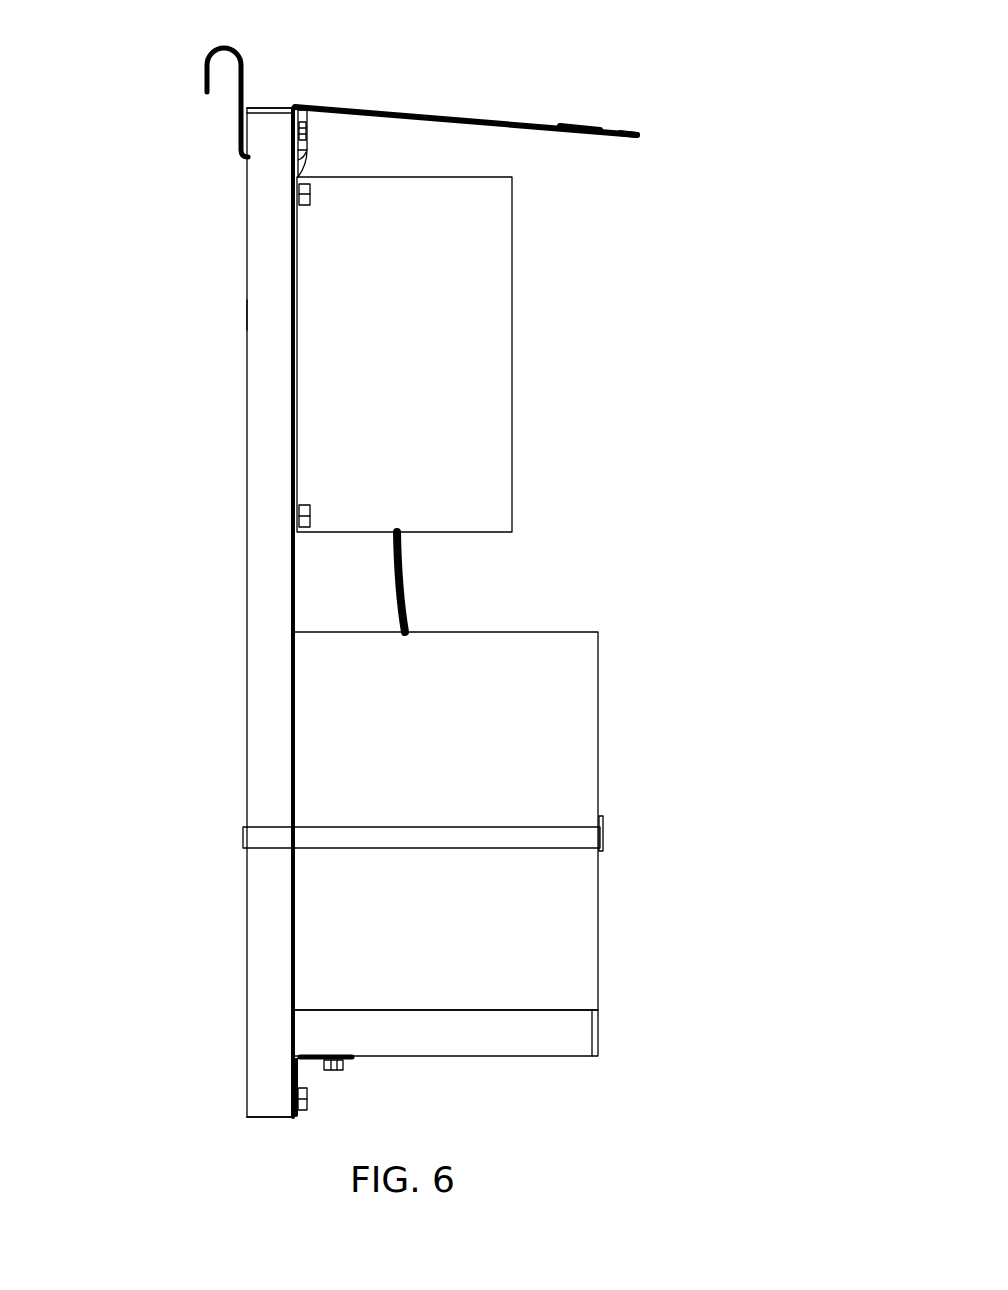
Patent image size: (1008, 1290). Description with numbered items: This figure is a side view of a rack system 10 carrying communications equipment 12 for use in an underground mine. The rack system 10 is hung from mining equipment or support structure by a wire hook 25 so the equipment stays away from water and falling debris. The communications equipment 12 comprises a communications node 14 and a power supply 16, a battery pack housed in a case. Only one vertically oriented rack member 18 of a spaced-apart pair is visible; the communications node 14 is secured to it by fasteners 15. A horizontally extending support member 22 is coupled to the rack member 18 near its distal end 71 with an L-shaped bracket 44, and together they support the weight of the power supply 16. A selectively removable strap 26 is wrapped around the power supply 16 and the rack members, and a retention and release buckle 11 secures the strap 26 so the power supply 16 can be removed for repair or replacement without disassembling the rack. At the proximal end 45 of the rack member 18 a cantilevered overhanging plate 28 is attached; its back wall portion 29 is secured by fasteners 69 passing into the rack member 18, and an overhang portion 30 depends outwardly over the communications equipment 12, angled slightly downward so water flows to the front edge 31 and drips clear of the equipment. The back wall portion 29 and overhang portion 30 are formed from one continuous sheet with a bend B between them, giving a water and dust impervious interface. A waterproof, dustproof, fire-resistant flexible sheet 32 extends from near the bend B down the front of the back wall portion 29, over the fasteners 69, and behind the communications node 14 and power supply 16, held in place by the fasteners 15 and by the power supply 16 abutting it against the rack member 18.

The rack system 10 is at (243, 313).
The retention and release buckle 11 is at (602, 825).
The communications equipment 12 is at (521, 785).
The communications node 14 is at (500, 243).
The fasteners 15 is at (310, 197).
The power supply 16 is at (590, 660).
The rack member 18 is at (265, 472).
The support member 22 is at (578, 1032).
The wire hook 25 is at (207, 63).
The strap 26 is at (540, 840).
The cantilevered overhanging plate 28 is at (540, 122).
The back wall portion 29 is at (290, 148).
The overhang portion 30 is at (588, 128).
The front edge 31 is at (637, 135).
The flexible sheet 32 is at (292, 600).
The L-shaped bracket 44 is at (297, 1070).
The proximal end 45 is at (265, 125).
The fasteners 69 is at (392, 110).
The distal end 71 is at (263, 1117).
The bend B is at (296, 108).